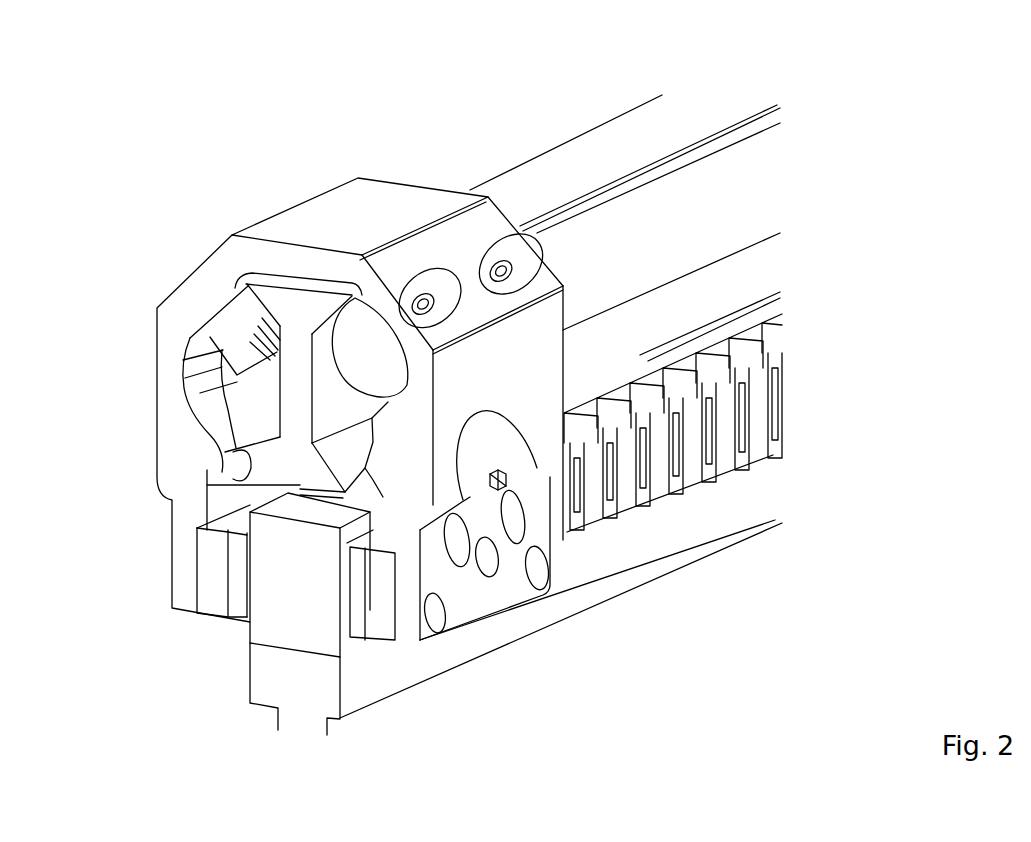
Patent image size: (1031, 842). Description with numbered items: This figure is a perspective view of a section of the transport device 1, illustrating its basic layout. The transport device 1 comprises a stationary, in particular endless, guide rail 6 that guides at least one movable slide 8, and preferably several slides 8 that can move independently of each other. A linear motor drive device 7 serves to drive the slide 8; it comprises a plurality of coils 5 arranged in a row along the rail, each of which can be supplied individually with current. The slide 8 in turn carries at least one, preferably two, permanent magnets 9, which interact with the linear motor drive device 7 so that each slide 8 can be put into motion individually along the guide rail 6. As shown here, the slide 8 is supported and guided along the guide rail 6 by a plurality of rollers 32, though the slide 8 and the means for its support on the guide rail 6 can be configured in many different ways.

The transport device 1 is at (866, 208).
The coils 5 is at (698, 485).
The guide rail 6 is at (664, 118).
The linear motor drive device 7 is at (288, 607).
The slide 8 is at (222, 265).
The permanent magnets 9 is at (240, 563).
The rollers 32 is at (248, 325).